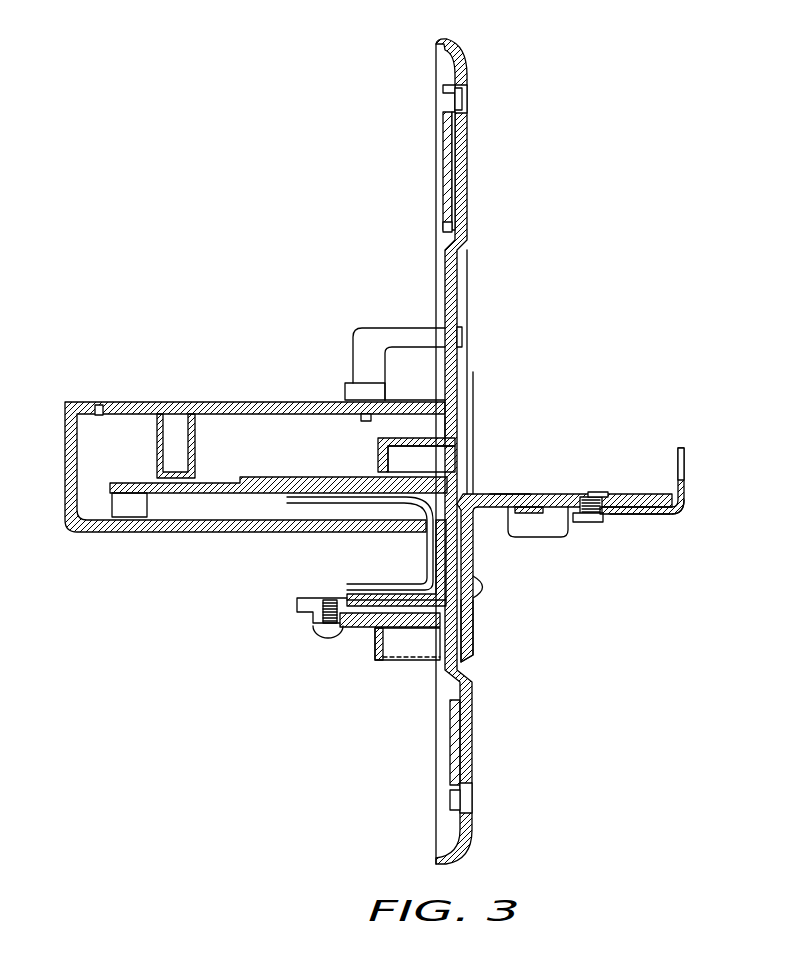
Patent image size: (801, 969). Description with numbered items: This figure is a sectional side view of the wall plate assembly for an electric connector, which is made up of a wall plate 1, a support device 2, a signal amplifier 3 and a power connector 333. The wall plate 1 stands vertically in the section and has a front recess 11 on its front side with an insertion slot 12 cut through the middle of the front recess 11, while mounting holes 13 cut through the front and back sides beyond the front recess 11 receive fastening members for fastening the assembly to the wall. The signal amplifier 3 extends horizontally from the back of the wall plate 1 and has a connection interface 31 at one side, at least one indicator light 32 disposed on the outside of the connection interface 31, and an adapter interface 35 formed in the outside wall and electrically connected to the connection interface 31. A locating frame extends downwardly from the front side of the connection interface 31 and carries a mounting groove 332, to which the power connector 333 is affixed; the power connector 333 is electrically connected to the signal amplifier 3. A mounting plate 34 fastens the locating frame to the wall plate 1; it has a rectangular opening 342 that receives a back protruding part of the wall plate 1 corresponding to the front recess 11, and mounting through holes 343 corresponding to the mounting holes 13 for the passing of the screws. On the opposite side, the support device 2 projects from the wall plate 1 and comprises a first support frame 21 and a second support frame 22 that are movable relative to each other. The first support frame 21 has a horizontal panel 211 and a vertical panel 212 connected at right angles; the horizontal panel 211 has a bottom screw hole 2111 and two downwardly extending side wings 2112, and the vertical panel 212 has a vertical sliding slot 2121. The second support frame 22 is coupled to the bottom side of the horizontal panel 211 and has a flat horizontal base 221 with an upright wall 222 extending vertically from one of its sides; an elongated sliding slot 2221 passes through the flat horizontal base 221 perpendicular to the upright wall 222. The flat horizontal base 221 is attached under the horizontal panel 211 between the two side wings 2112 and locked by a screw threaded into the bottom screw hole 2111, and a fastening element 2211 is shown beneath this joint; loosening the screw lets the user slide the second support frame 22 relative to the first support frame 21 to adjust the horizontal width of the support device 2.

The wall plate 1 is at (488, 451).
The front recess 11 is at (455, 283).
The insertion slot 12 is at (457, 422).
The mounting holes 13 is at (464, 98).
The support device 2 is at (621, 521).
The first support frame 21 is at (553, 481).
The horizontal panel 211 is at (508, 494).
The bottom screw hole 2111 is at (613, 480).
The side wings 2112 is at (537, 532).
The vertical panel 212 is at (475, 634).
The vertical sliding slot 2121 is at (476, 597).
The second support frame 22 is at (692, 524).
The flat horizontal base 221 is at (653, 514).
The nut 2211 is at (610, 522).
The upright wall 222 is at (684, 500).
The elongated sliding slot 2221 is at (731, 471).
The signal amplifier 3 is at (240, 526).
The connection interface 31 is at (390, 450).
The indicator light 32 is at (398, 337).
The mounting groove 332 is at (420, 603).
The power connector 333 is at (380, 660).
The mounting plate 34 is at (448, 160).
The rectangular opening 342 is at (447, 222).
The mounting through holes 343 is at (448, 95).
The adapter interface 35 is at (183, 417).